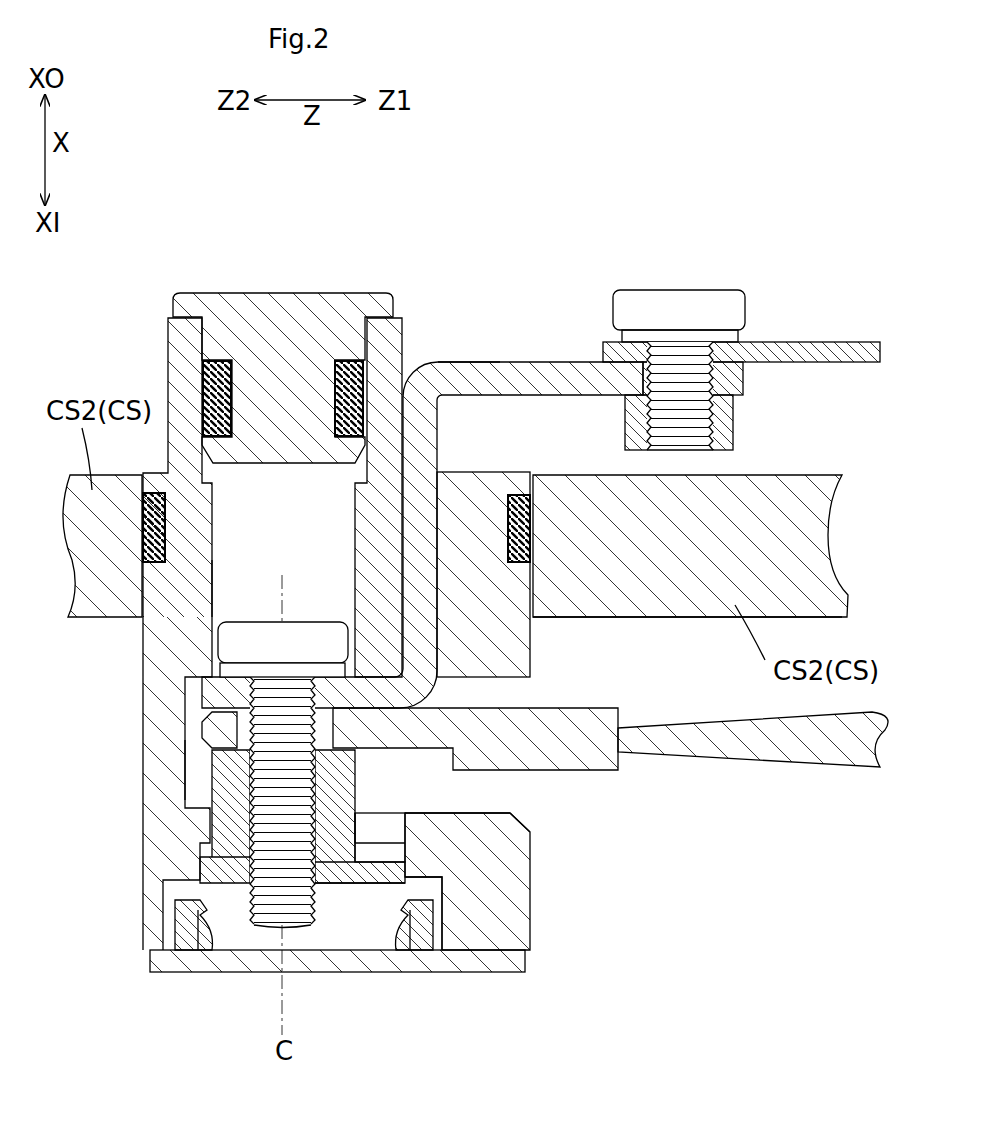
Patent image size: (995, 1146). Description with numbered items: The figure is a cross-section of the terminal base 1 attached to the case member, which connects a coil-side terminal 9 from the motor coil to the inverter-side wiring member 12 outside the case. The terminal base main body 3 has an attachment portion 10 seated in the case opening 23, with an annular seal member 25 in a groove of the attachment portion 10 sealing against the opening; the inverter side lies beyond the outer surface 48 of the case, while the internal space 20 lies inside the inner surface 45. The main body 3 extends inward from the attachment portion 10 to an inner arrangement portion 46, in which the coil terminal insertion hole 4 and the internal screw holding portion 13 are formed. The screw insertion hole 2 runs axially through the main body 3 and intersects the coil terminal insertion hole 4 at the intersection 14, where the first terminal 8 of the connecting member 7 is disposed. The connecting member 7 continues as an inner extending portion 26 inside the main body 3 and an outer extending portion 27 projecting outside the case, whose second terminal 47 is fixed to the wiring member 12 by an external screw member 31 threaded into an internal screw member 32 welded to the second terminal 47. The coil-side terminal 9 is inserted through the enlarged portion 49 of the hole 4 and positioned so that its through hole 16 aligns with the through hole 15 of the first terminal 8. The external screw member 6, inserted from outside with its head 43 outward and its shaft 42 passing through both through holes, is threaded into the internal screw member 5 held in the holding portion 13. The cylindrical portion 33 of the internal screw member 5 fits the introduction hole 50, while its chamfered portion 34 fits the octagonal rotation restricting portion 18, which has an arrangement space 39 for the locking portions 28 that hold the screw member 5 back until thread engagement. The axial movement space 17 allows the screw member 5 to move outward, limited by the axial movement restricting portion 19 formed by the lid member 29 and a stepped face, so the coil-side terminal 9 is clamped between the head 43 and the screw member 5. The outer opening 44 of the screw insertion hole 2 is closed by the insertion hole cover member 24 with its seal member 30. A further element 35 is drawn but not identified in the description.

The terminal base 1 is at (452, 292).
The screw insertion hole 2 is at (256, 570).
The terminal base main body 3 is at (345, 792).
The coil terminal insertion hole 4 is at (505, 785).
The internal screw member 5 is at (250, 815).
The external screw member 6 is at (300, 630).
The connecting member 7 is at (374, 492).
The first terminal 8 is at (205, 690).
The coil-side terminal 9 is at (590, 715).
The attachment portion 10 is at (134, 546).
The inverter-side wiring member 12 is at (796, 342).
The internal screw holding portion 13 is at (333, 890).
The intersection 14 is at (205, 765).
The through hole 15 is at (300, 700).
The through hole 16 is at (330, 747).
The axial movement space 17 is at (405, 865).
The rotation restricting portion 18 is at (205, 858).
The axial movement restricting portion 19 is at (383, 850).
The internal space 20 is at (751, 661).
The case opening 23 is at (478, 462).
The insertion hole cover member 24 is at (288, 300).
The seal member 25 is at (524, 525).
The inner extending portion 26 is at (418, 500).
The outer extending portion 27 is at (540, 378).
The locking portions 28 is at (205, 915).
The lid member 29 is at (492, 975).
The seal member 30 is at (360, 370).
The external screw member 31 is at (690, 292).
The internal screw member 32 is at (732, 428).
The cylindrical portion 33 is at (226, 790).
The chamfered portion 34 is at (380, 884).
The blade 35 is at (762, 746).
The arrangement space 39 is at (405, 890).
The shaft 42 is at (292, 930).
The head 43 is at (272, 630).
The outer opening 44 is at (175, 360).
The inner surface 45 is at (690, 618).
The inner arrangement portion 46 is at (512, 935).
The second terminal 47 is at (745, 385).
The outer surface 48 is at (793, 473).
The enlarged portion 49 is at (522, 815).
The introduction hole 50 is at (376, 880).